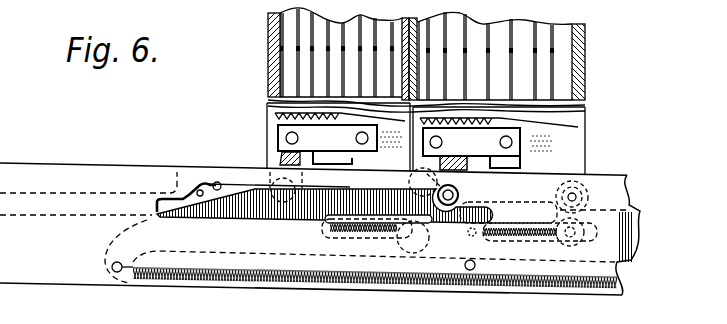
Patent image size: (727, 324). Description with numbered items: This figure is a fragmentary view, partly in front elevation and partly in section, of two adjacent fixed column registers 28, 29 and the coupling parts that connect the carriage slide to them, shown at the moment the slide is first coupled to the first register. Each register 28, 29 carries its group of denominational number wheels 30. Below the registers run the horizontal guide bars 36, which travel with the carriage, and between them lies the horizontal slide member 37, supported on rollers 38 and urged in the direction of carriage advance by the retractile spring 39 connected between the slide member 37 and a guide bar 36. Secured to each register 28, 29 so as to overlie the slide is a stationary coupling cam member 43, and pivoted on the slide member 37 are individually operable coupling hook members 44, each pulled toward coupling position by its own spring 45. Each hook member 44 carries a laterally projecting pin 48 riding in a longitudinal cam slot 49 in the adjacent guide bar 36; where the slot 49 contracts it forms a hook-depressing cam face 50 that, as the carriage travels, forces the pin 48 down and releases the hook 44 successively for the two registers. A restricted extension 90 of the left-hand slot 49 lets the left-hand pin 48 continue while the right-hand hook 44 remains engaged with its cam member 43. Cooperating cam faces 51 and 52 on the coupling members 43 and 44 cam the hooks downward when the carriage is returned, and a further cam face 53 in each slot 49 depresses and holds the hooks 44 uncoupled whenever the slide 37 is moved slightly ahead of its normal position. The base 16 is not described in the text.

The column register 28 is at (268, 30).
The column register 29 is at (585, 45).
The denominational number wheels 30 is at (290, 63).
The guide bar 36 is at (52, 176).
The slide member 37 is at (228, 207).
The rollers 38 is at (472, 262).
The retractile spring 39 is at (268, 289).
The coupling cam member 43 is at (267, 138).
The coupling hook member 44 is at (280, 163).
The spring 45 is at (374, 240).
The pin 48 is at (452, 195).
The cam slot 49 is at (214, 182).
The hook-depressing cam face 50 is at (178, 183).
The cam face 51 is at (352, 157).
The cam face 52 is at (440, 163).
The hook depressing cam face 53 is at (460, 196).
The restricted extension 90 is at (98, 192).
The base 16 is at (491, 318).